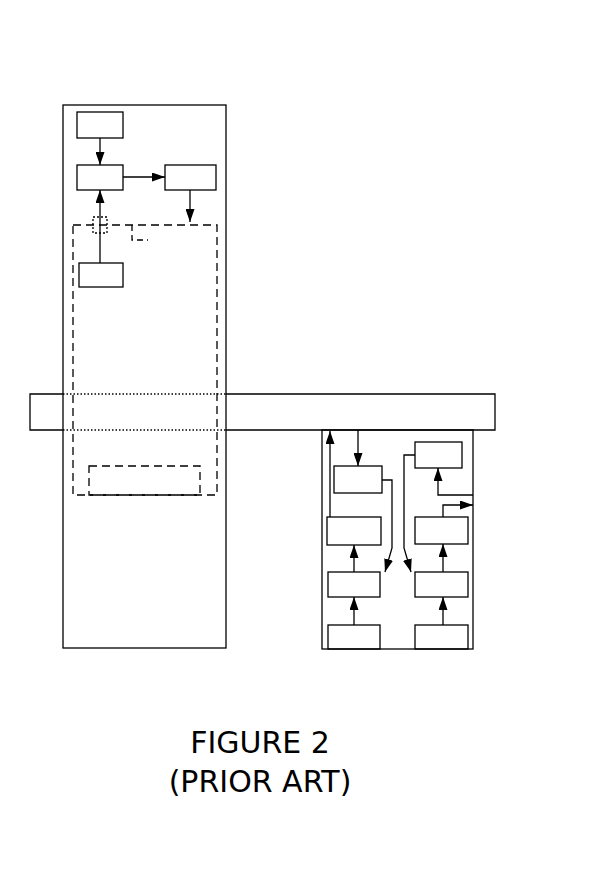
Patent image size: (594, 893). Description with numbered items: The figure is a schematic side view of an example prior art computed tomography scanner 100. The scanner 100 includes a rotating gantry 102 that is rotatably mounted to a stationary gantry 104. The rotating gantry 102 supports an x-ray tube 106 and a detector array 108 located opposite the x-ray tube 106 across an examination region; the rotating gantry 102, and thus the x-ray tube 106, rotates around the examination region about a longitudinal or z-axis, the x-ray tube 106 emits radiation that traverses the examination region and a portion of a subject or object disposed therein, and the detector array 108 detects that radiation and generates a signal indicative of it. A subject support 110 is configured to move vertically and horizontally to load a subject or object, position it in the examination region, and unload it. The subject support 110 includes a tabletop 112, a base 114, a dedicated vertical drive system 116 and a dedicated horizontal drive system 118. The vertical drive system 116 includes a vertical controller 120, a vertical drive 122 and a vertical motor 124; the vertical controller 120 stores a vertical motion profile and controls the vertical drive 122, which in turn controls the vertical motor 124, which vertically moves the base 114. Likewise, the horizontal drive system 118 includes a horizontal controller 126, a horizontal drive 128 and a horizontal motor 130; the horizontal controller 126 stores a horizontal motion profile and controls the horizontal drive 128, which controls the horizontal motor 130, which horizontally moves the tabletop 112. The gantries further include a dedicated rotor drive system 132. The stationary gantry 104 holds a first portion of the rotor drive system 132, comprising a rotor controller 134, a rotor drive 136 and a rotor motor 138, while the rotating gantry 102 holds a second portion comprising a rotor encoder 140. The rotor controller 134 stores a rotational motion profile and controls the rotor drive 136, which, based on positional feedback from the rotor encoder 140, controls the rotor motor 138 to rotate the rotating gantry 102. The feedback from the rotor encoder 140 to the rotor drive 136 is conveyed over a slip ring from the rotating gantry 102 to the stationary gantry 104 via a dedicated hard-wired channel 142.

The computed tomography (CT) scanner 100 is at (378, 54).
The rotating gantry 102 is at (217, 277).
The stationary gantry 104 is at (226, 155).
The x-ray tube 106 is at (150, 236).
The detector array 108 is at (105, 466).
The subject support 110 is at (455, 376).
The tabletop 112 is at (365, 395).
The base 114 is at (473, 462).
The vertical drive system 116 is at (436, 668).
The horizontal drive system 118 is at (362, 668).
The vertical controller 120 is at (473, 632).
The vertical drive 122 is at (468, 585).
The vertical motor 124 is at (468, 538).
The horizontal controller 126 is at (322, 630).
The horizontal drive 128 is at (328, 587).
The horizontal motor 130 is at (327, 530).
The rotor drive system 132 is at (61, 104).
The rotor controller 134 is at (123, 128).
The rotor drive 136 is at (108, 165).
The rotor motor 138 is at (175, 190).
The rotor encoder 140 is at (105, 287).
The channel 142 is at (105, 230).